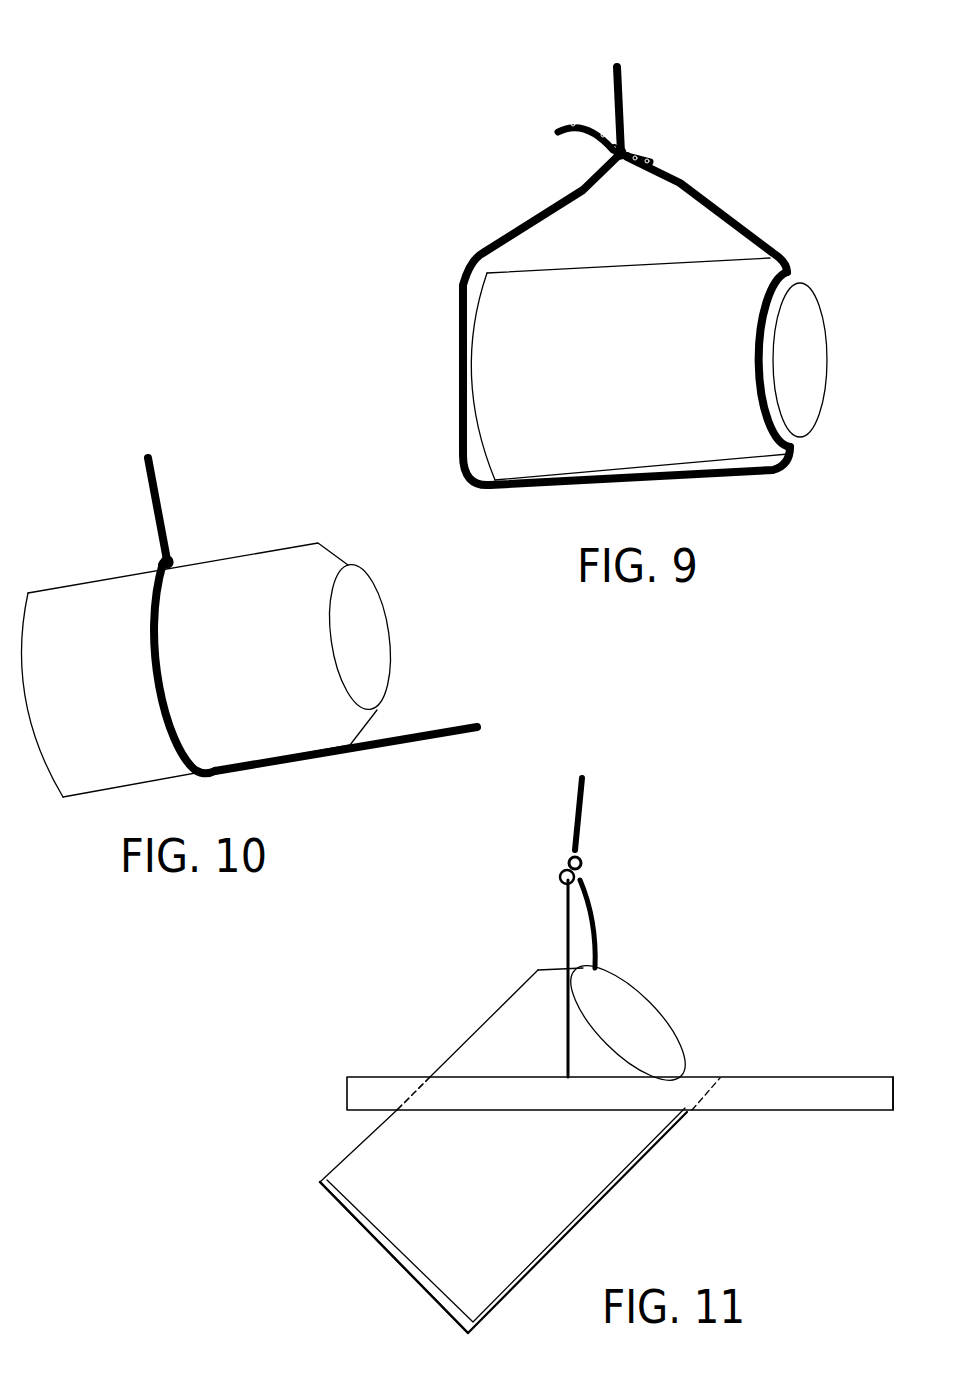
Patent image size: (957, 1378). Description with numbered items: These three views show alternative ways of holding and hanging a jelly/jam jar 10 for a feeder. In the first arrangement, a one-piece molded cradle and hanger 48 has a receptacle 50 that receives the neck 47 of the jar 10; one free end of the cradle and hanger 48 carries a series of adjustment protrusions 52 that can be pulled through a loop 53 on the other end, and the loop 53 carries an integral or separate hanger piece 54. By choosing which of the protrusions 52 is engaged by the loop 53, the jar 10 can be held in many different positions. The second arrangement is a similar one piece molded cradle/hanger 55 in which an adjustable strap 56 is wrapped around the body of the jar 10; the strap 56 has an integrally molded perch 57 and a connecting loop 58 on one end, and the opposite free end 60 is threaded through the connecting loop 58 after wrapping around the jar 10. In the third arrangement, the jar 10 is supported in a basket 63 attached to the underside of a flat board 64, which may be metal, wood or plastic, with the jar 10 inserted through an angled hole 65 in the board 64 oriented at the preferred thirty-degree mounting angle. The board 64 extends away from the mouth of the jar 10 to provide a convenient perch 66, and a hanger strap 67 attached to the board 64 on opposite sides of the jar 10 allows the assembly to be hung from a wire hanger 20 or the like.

In FIG. 9, the jar 10 is at (558, 401).
In FIG. 10, the jar 10 is at (87, 691).
In FIG. 11, the jar 10 is at (438, 1228).
In FIG. 11, the wire hanger 20 is at (585, 778).
In FIG. 9, the neck of the jar 47 is at (788, 370).
In FIG. 9, the one-piece molded cradle and hanger 48 is at (778, 169).
In FIG. 9, the receptacle 50 is at (790, 270).
In FIG. 9, the adjustment protrusions 52 is at (563, 123).
In FIG. 9, the loop 53 is at (627, 148).
In FIG. 9, the hanger piece 54 is at (613, 100).
In FIG. 10, the one piece molded cradle/hanger 55 is at (206, 540).
In FIG. 10, the adjustable strap 56 is at (163, 665).
In FIG. 10, the integrally molded perch 57 is at (475, 723).
In FIG. 10, the connecting loop 58 is at (158, 562).
In FIG. 10, the free end 60 is at (152, 502).
In FIG. 11, the basket 63 is at (318, 1182).
In FIG. 11, the flat board 64 is at (350, 1088).
In FIG. 11, the angled hole 65 is at (408, 1097).
In FIG. 11, the perch 66 is at (777, 1095).
In FIG. 11, the hanger strap 67 is at (597, 942).